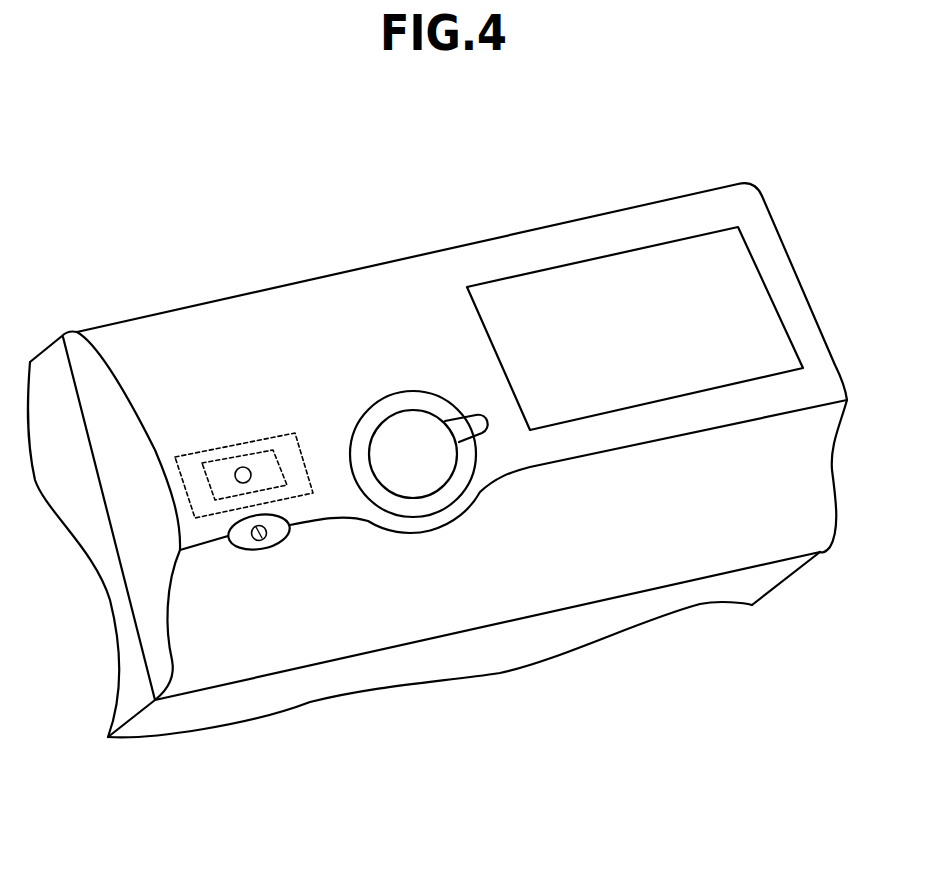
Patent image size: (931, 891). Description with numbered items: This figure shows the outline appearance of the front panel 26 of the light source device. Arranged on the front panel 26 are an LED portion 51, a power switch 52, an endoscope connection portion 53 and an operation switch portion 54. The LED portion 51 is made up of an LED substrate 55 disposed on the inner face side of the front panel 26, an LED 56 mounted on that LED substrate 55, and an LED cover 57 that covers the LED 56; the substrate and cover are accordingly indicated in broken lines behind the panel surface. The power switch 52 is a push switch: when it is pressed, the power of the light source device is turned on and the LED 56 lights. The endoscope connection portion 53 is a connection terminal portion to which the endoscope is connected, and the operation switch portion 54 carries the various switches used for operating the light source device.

The front panel 26 is at (370, 265).
The LED portion 51 is at (213, 370).
The power switch 52 is at (267, 548).
The endoscope connection portion 53 is at (470, 490).
The operation switch portion 54 is at (677, 398).
The LED substrate 55 is at (303, 462).
The LED 56 is at (243, 466).
The LED cover 57 is at (208, 490).